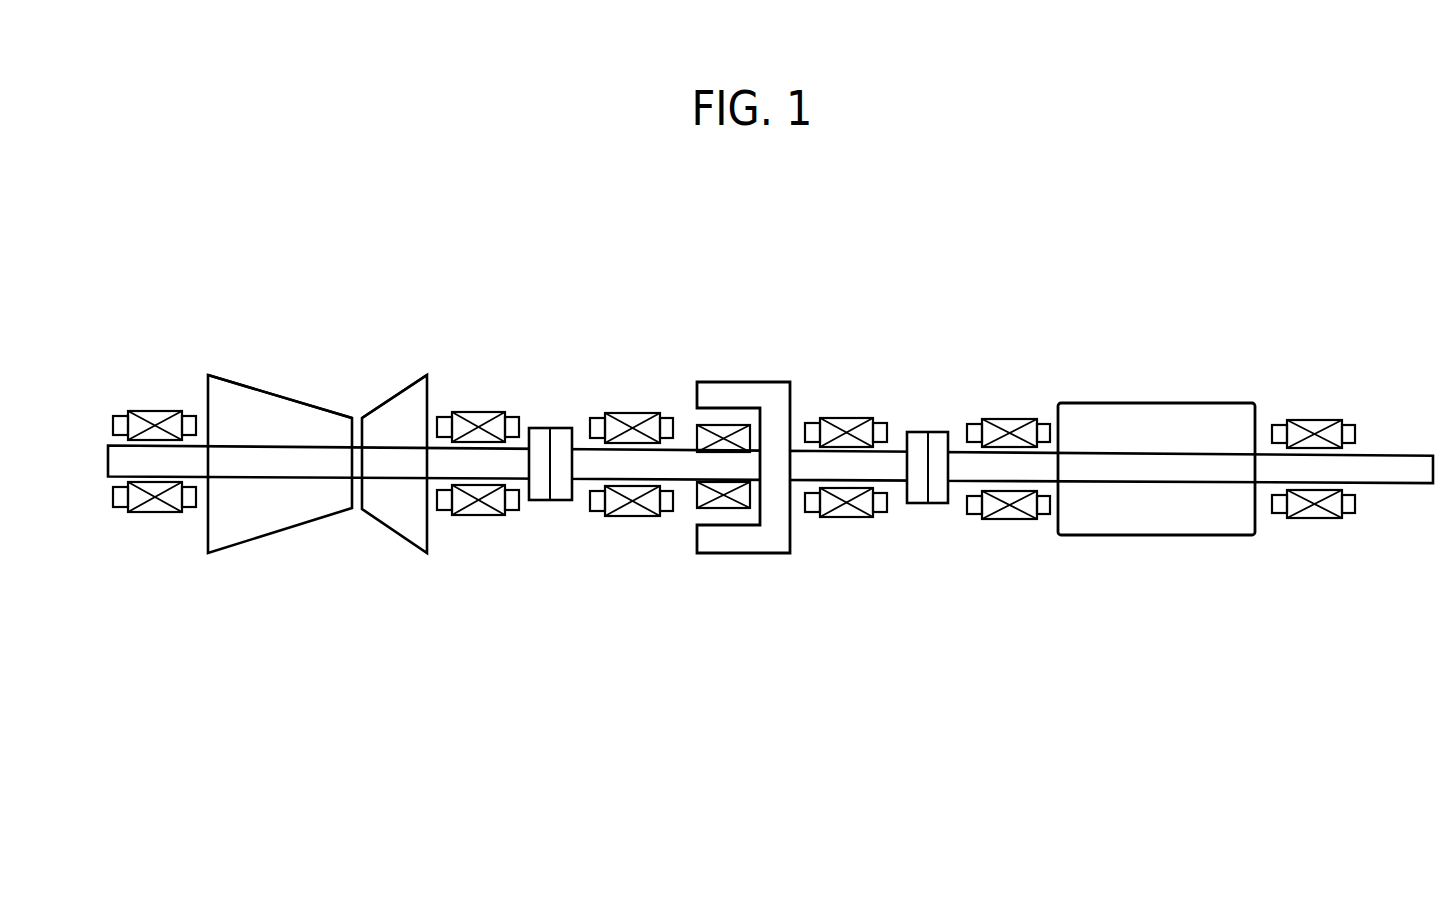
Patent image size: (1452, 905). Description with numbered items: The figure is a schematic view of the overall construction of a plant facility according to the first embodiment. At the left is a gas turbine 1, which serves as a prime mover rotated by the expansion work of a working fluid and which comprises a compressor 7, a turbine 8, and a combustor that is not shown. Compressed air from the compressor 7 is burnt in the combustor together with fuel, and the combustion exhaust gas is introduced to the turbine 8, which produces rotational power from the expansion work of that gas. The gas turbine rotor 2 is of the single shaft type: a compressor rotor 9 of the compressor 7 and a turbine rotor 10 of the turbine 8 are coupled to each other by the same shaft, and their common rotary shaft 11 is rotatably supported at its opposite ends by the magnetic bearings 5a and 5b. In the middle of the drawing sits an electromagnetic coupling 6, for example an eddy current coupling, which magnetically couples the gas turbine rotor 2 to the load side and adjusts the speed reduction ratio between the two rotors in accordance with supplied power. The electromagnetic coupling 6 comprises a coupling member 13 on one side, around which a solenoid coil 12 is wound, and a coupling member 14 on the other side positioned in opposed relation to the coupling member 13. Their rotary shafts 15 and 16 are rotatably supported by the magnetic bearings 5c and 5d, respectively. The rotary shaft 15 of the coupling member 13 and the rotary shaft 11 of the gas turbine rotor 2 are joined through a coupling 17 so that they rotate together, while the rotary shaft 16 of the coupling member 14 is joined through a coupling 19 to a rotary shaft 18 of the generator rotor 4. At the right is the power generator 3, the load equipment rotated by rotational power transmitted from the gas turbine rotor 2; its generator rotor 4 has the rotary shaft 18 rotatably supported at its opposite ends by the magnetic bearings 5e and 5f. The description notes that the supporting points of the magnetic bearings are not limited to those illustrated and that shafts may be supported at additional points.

The gas turbine 1 is at (316, 369).
The gas turbine rotor 2 is at (316, 411).
The power generator 3 is at (1156, 389).
The generator rotor 4 is at (1240, 403).
The magnetic bearing 5a is at (157, 513).
The magnetic bearing 5b is at (470, 517).
The magnetic bearing 5c is at (640, 517).
The magnetic bearing 5d is at (833, 517).
The magnetic bearing 5e is at (1007, 520).
The magnetic bearing 5f is at (1312, 520).
The electromagnetic coupling 6 is at (744, 403).
The compressor 7 is at (213, 364).
The turbine 8 is at (421, 365).
The compressor rotor 9 is at (297, 401).
The turbine rotor 10 is at (394, 376).
The rotary shaft 11 is at (110, 446).
The solenoid coil 12 is at (705, 421).
The coupling member 13 is at (710, 406).
The coupling member 14 is at (799, 397).
The rotary shaft 15 is at (582, 480).
The rotary shaft 16 is at (895, 487).
The coupling 17 is at (560, 428).
The rotary shaft 18 is at (1405, 485).
The coupling 19 is at (937, 432).